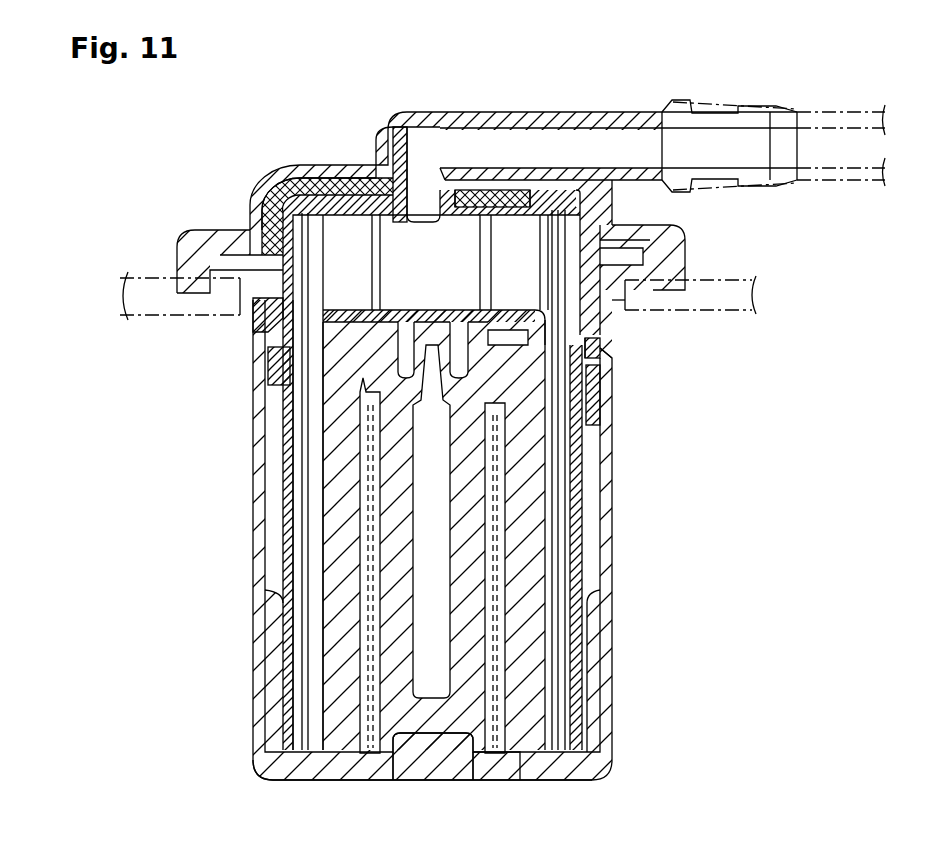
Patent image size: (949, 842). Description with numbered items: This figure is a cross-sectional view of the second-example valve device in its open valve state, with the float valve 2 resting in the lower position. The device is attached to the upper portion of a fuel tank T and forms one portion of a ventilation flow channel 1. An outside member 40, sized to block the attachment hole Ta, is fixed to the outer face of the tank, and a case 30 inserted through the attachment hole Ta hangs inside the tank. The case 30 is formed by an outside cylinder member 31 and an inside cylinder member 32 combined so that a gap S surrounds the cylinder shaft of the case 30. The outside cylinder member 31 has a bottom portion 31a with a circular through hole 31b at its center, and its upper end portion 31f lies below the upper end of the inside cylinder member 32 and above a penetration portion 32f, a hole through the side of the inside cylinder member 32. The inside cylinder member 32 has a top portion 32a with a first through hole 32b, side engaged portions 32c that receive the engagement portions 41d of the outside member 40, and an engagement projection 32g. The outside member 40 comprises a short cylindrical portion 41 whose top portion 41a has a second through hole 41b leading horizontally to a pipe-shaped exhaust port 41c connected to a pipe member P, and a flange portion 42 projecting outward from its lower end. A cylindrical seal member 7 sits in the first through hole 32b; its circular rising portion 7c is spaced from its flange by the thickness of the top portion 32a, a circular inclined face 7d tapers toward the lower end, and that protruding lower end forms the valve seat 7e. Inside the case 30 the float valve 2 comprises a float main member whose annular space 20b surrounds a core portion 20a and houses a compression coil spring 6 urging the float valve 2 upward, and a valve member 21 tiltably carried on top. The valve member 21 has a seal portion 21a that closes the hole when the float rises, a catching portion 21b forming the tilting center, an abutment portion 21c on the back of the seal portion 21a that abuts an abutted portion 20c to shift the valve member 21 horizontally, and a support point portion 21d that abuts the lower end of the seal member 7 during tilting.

The ventilation flow channel 1 is at (587, 147).
The float valve 2 is at (442, 484).
The compression coil spring 6 is at (495, 662).
The cylindrical seal member 7 is at (433, 210).
The circular rising portion 7c is at (387, 187).
The circular inclined face 7d is at (478, 195).
The valve seat 7e is at (430, 207).
The core portion 20a is at (478, 593).
The annular space 20b is at (505, 632).
The abutted portion 20c is at (360, 338).
The valve member 21 is at (428, 310).
The seal portion 21a is at (459, 350).
The catching portion 21b is at (525, 307).
The abutment portion 21c is at (470, 367).
The support point portion 21d is at (400, 322).
The case 30 is at (613, 518).
The outside cylinder member 31 is at (422, 770).
The bottom portion 31a is at (497, 755).
The circular through hole 31b is at (440, 753).
The upper end portion 31f is at (280, 372).
The inside cylinder member 32 is at (300, 207).
The top portion 32a is at (327, 197).
The first through hole 32b is at (482, 205).
The engaged portion 32c is at (605, 355).
The penetration portion 32f is at (285, 470).
The hook 32g is at (253, 322).
The outside member 40 is at (455, 191).
The short cylindrical portion 41 is at (253, 210).
The top portion 41a is at (350, 163).
The second through hole 41b is at (420, 195).
The exhaust port 41c is at (708, 142).
The engagement portion 41d is at (605, 385).
The flange portion 42 is at (670, 262).
The pipe member P is at (853, 155).
The gap S is at (277, 450).
The fuel tank T is at (765, 302).
The attachment hole Ta is at (612, 303).